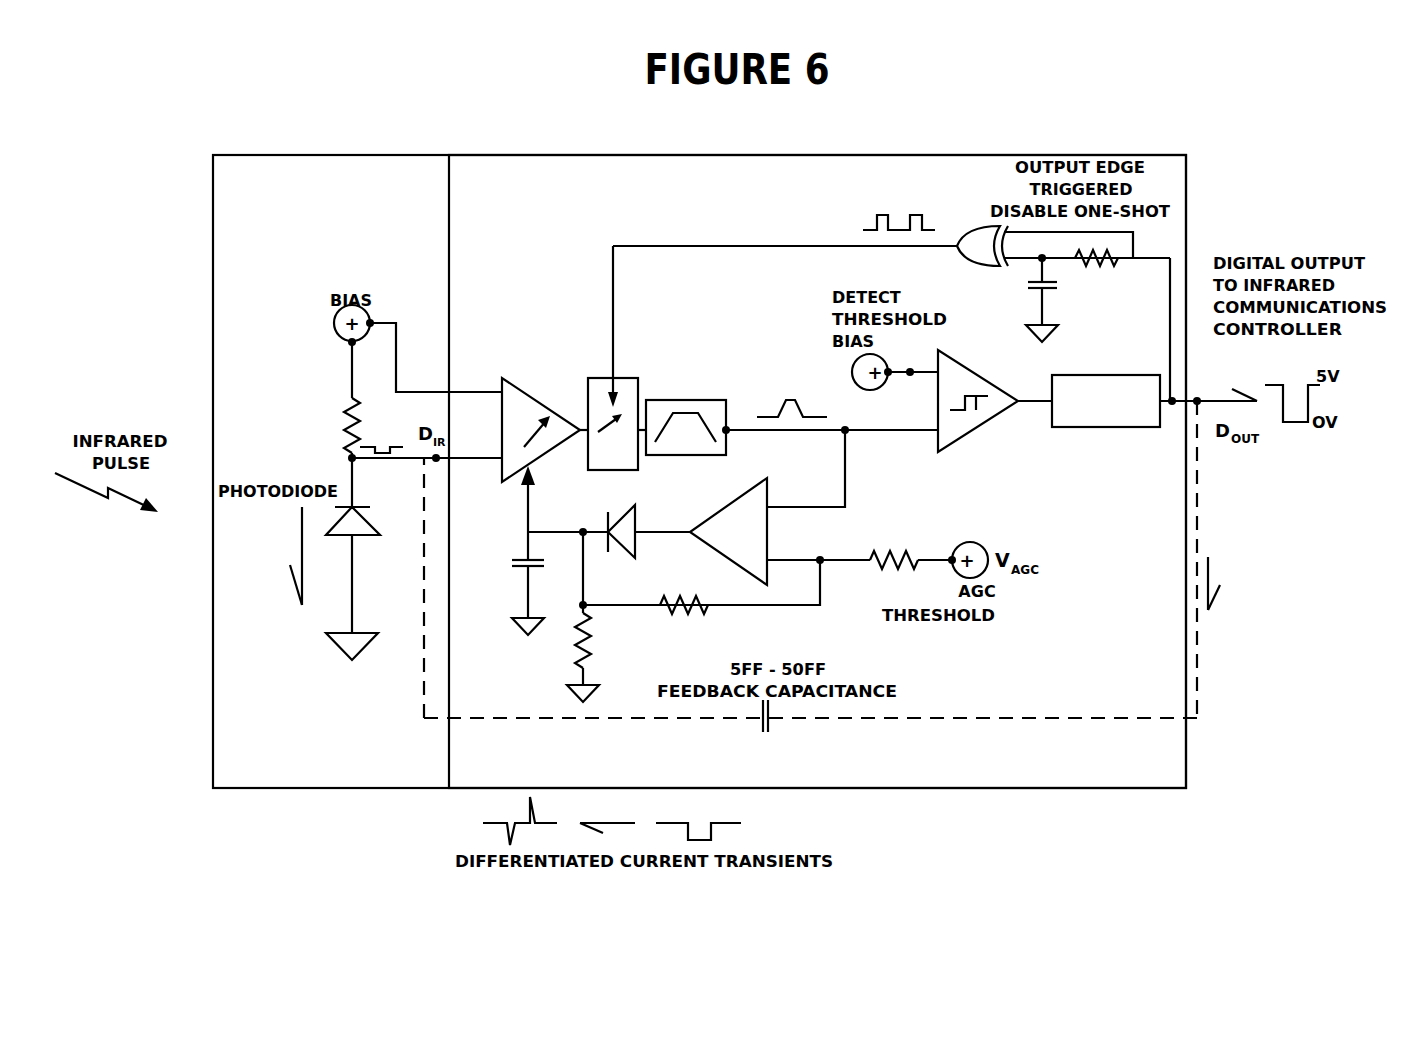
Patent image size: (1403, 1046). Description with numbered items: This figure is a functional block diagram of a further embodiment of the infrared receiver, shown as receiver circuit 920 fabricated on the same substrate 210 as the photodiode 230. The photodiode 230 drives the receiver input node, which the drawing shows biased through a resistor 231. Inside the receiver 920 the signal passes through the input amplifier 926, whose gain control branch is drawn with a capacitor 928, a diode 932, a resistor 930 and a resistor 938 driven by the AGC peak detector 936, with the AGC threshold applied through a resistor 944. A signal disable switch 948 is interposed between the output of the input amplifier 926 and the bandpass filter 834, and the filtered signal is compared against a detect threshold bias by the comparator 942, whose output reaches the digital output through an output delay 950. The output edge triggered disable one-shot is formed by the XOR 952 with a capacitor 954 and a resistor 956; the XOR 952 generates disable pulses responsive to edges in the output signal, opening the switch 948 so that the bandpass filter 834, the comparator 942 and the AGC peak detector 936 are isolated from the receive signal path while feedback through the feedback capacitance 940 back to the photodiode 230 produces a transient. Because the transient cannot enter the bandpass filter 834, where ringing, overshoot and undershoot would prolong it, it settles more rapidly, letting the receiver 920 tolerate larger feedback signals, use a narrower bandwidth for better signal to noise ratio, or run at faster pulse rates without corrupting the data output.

The IC substrate 210 is at (340, 155).
The receiver circuit 920 is at (657, 216).
The photodiode 230 is at (365, 535).
The bias resistor 231 is at (366, 405).
The input amplifier 926 is at (515, 385).
The capacitor 928 is at (512, 560).
The resistor 930 is at (595, 648).
The diode 932 is at (640, 548).
The AGC peak detector 936 is at (738, 568).
The resistor 938 is at (686, 613).
The feedback capacitance 940 is at (770, 728).
The comparator 942 is at (975, 445).
The AGC threshold resistor 944 is at (884, 563).
The signal disable switch 948 is at (628, 377).
The bandpass filter 834 is at (702, 400).
The output delay 950 is at (1085, 375).
The XOR 952 is at (955, 228).
The one-shot capacitor 954 is at (1030, 287).
The one-shot resistor 956 is at (1090, 262).